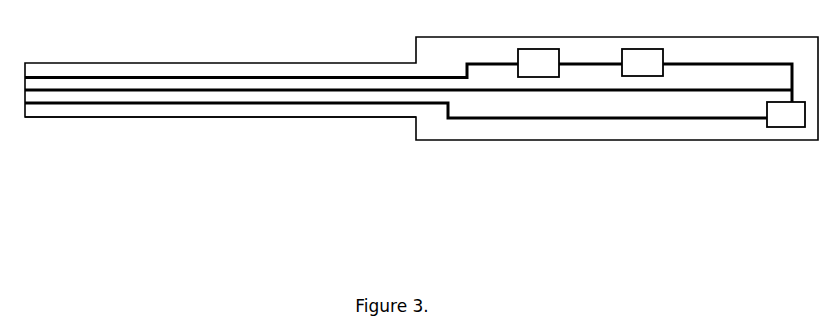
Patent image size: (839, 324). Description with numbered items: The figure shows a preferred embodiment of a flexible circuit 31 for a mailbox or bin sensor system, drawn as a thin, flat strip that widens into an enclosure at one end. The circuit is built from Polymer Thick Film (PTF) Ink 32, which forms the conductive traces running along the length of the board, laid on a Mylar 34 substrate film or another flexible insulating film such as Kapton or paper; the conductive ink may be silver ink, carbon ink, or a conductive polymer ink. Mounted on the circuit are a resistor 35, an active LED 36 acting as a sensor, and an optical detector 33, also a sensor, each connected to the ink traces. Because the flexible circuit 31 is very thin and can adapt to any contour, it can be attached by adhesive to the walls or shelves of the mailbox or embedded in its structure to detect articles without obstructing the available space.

The flexible circuit 31 is at (38, 118).
The Polymer Thick Film (PTF) Ink 32 is at (156, 118).
The optical detector 33 is at (793, 129).
The Mylar 34 is at (287, 118).
The resistor 35 is at (533, 66).
The active LED 36 is at (636, 66).